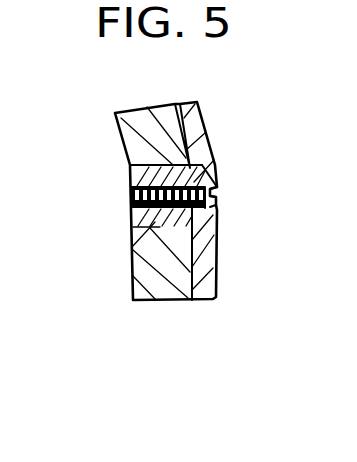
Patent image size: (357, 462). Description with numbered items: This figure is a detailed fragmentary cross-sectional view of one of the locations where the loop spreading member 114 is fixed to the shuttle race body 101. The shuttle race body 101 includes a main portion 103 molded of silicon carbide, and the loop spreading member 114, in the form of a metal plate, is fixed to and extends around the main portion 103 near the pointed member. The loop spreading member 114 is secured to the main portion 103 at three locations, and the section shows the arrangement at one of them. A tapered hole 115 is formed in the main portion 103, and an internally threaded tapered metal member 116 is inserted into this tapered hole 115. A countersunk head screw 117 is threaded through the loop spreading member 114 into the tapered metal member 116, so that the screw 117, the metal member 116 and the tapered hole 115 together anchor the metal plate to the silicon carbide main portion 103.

The shuttle race body 101 is at (165, 303).
The main portion 103 is at (170, 150).
The loop spreading member 114 is at (202, 248).
The tapered hole 115 is at (131, 167).
The tapered metal member 116 is at (132, 226).
The countersunk head screw 117 is at (225, 206).